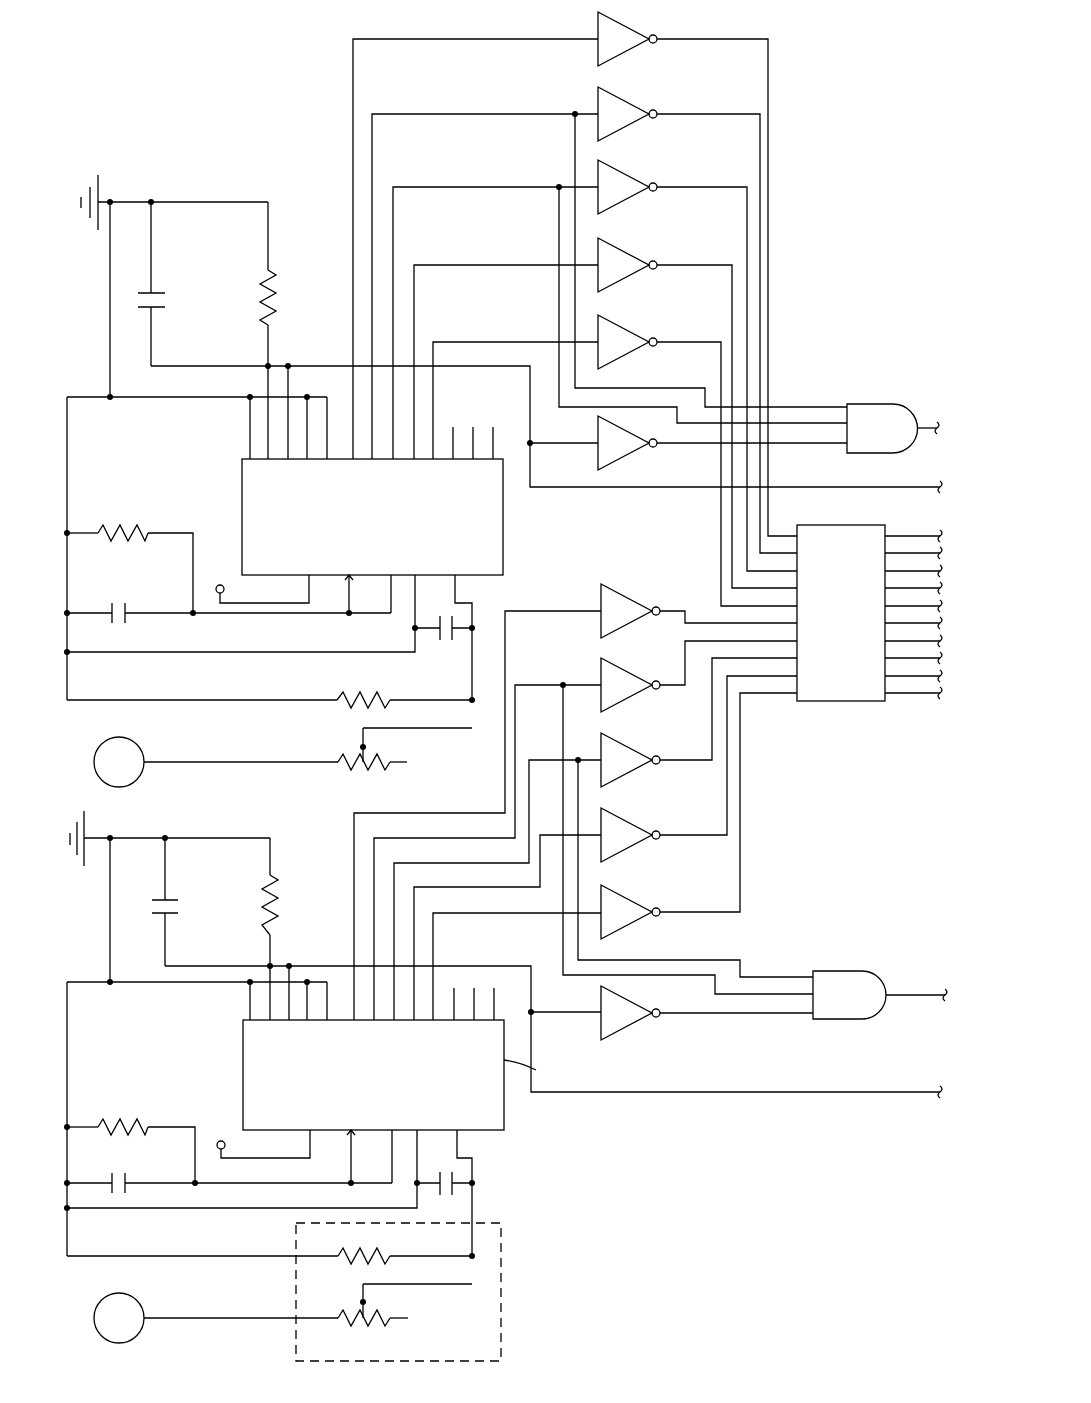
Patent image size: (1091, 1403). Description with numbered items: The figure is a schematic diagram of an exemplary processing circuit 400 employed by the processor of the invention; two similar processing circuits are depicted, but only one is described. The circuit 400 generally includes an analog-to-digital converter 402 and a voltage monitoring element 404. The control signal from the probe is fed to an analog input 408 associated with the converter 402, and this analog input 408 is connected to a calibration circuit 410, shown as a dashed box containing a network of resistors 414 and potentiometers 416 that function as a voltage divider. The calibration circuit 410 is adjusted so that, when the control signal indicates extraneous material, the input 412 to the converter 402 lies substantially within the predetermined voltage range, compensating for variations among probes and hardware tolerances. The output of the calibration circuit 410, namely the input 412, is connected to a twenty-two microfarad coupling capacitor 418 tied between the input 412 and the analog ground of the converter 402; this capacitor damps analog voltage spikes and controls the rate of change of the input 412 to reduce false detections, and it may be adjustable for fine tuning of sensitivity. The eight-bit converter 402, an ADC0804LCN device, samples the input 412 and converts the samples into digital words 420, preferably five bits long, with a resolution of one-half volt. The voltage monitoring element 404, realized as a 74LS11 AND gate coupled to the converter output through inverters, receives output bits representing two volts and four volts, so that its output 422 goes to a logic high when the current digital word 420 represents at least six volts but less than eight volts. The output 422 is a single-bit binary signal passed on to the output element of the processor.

The circuit 400 is at (163, 40).
The analog-to-digital converter 402 is at (504, 1097).
The voltage monitoring element 404 is at (815, 968).
The analog input 408 is at (257, 1320).
The calibration circuit 410 is at (501, 1277).
The input 412 is at (472, 1210).
The resistors 414 is at (343, 1252).
The potentiometers 416 is at (392, 1314).
The coupling capacitor 418 is at (455, 1178).
The digital words 420 is at (448, 975).
The output 422 is at (940, 990).